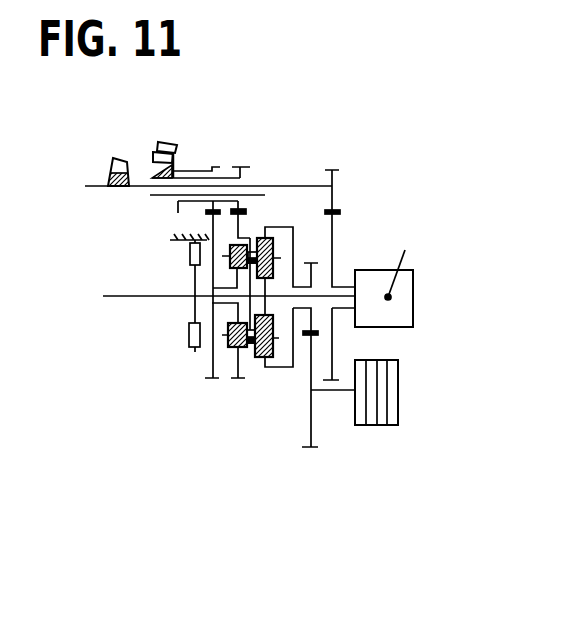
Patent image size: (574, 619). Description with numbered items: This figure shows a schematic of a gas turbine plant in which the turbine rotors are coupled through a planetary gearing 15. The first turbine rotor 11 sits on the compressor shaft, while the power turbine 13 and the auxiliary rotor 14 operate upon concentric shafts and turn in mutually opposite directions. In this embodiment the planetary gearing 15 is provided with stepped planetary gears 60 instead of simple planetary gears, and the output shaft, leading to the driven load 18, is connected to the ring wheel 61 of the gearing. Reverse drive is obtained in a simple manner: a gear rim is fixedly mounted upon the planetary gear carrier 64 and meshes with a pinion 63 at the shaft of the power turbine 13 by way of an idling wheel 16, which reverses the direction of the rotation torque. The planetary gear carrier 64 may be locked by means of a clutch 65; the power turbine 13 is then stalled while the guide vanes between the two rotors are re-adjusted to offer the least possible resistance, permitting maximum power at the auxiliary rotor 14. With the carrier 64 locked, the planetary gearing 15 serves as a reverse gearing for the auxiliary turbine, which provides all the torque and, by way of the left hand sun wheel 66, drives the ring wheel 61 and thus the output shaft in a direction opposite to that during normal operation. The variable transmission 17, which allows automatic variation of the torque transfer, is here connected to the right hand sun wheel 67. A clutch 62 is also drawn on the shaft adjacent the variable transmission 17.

The first turbine rotor 11 is at (110, 178).
The power turbine 13 is at (155, 155).
The auxiliary rotor 14 is at (174, 141).
The planetary gearing 15 is at (207, 348).
The idling wheel 16 is at (248, 209).
The variable transmission 17 is at (405, 287).
The driven load 18 is at (390, 398).
The stepped planetary gears 60 is at (256, 249).
The ring wheel 61 is at (263, 362).
The clutch 62 is at (321, 342).
The pinion 63 is at (249, 166).
The planetary gear carrier 64 is at (227, 307).
The clutch 65 is at (183, 252).
The left hand sun wheel 66 is at (237, 279).
The right hand sun wheel 67 is at (283, 277).